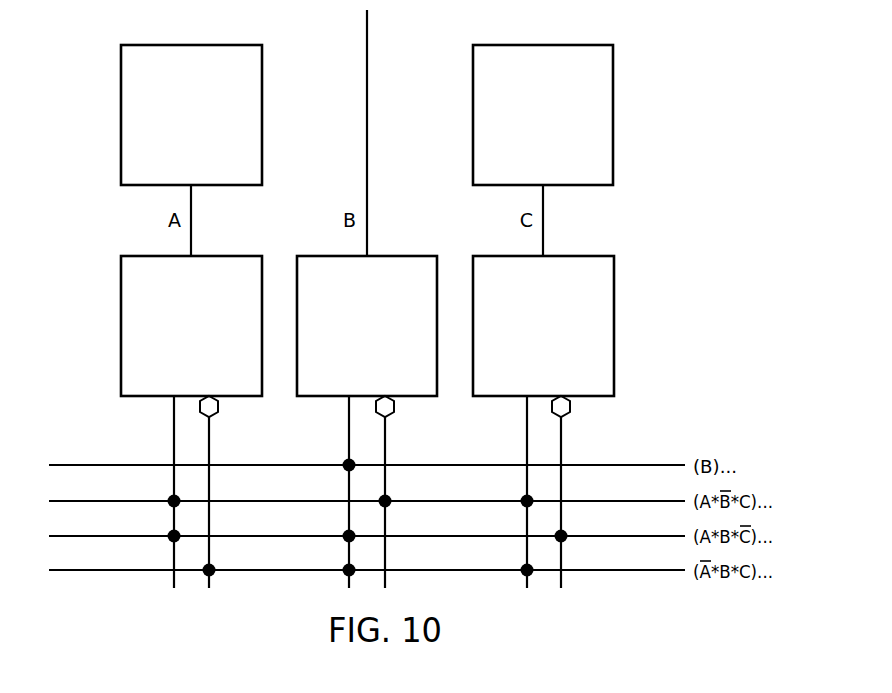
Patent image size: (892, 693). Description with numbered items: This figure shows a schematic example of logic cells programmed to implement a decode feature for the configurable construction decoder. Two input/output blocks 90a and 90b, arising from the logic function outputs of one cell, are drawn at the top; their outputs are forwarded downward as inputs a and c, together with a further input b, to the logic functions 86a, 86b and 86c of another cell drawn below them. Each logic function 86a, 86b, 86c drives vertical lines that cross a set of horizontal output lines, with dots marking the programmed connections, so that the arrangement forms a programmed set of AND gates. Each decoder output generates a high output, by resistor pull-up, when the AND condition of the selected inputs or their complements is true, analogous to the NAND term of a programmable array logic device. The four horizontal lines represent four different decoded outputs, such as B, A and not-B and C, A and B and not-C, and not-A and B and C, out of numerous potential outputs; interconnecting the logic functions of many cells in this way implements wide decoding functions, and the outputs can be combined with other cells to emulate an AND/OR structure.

The input/output block 90a is at (174, 137).
The input/output block 90b is at (526, 137).
The logic function 86a is at (174, 335).
The logic function 86b is at (350, 335).
The logic function 86c is at (526, 335).